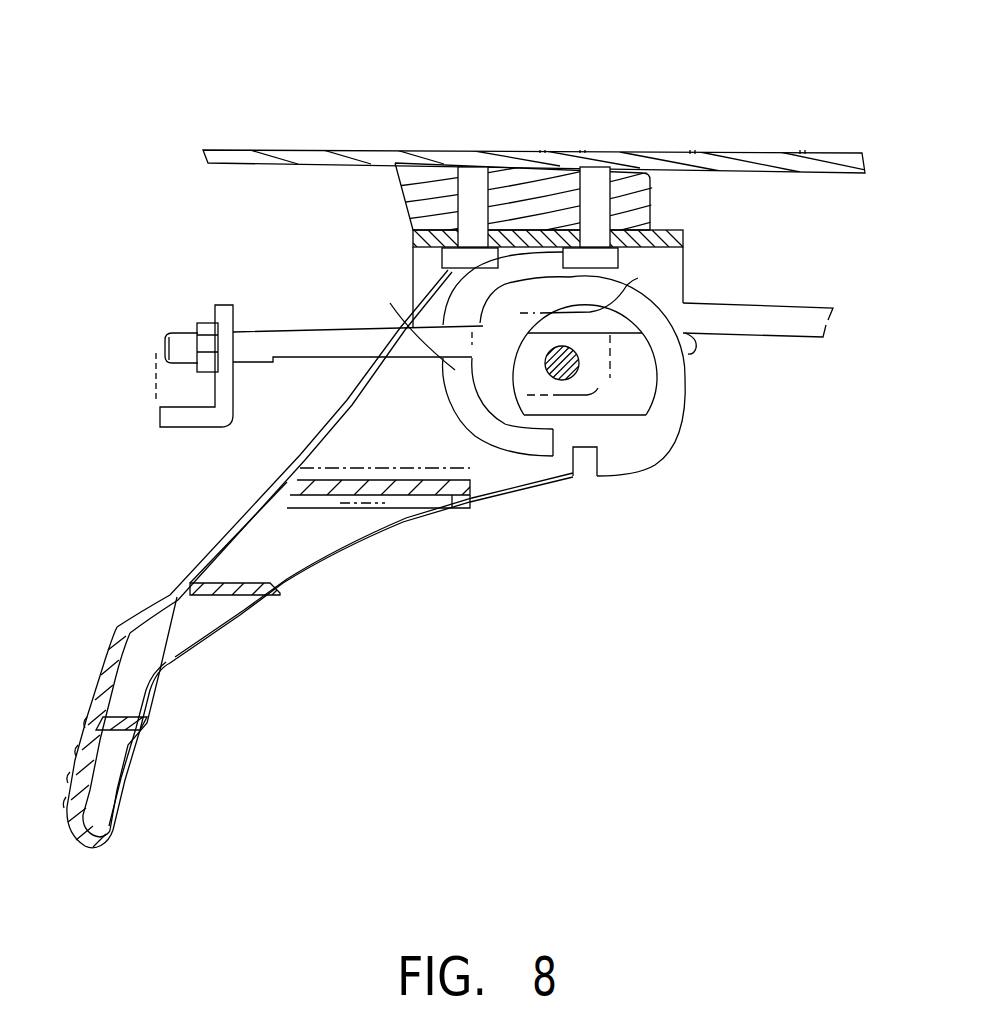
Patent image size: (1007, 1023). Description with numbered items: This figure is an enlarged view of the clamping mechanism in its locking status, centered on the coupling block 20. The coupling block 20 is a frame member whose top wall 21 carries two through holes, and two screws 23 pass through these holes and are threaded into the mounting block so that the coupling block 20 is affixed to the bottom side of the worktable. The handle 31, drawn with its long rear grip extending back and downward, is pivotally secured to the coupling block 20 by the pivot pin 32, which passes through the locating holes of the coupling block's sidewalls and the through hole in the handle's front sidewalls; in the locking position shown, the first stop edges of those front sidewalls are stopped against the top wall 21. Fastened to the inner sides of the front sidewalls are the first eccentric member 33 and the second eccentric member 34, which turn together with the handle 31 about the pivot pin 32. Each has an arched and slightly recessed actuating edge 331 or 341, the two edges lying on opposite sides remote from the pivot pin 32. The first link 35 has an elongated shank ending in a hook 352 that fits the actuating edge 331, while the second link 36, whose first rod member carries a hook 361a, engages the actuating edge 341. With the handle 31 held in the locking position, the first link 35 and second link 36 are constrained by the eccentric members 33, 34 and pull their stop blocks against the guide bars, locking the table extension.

The coupling block 20 is at (685, 277).
The top wall 21 is at (533, 240).
The screws 23 is at (472, 197).
The handle 31 is at (103, 662).
The pivot pin 32 is at (562, 370).
The first eccentric member 33 is at (497, 377).
The second eccentric member 34 is at (617, 400).
The actuating edge 341 is at (660, 377).
The first link 35 is at (785, 337).
The hook 352 is at (455, 378).
The second link 36 is at (297, 328).
The hook 361a is at (643, 312).
The actuating edge 331 is at (390, 303).